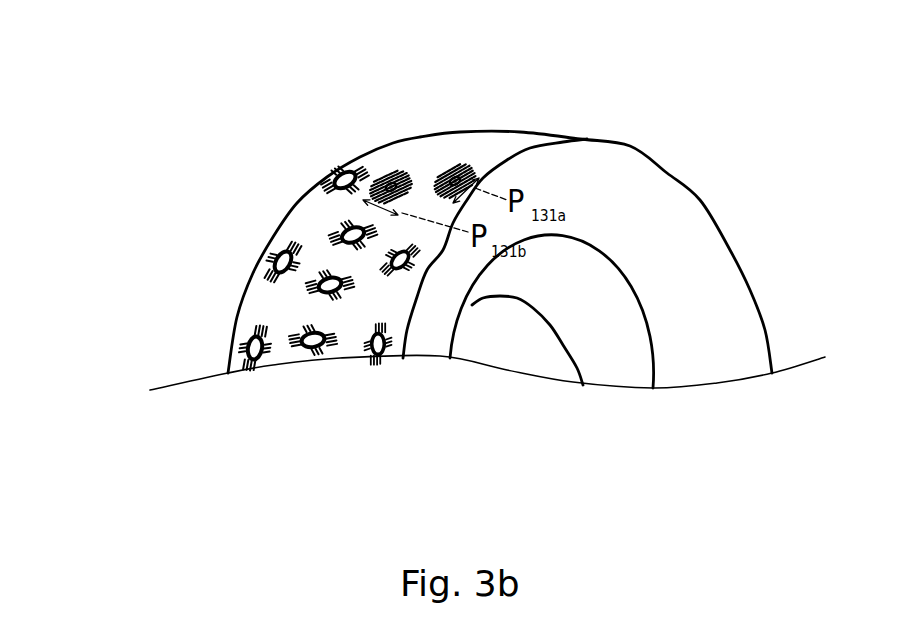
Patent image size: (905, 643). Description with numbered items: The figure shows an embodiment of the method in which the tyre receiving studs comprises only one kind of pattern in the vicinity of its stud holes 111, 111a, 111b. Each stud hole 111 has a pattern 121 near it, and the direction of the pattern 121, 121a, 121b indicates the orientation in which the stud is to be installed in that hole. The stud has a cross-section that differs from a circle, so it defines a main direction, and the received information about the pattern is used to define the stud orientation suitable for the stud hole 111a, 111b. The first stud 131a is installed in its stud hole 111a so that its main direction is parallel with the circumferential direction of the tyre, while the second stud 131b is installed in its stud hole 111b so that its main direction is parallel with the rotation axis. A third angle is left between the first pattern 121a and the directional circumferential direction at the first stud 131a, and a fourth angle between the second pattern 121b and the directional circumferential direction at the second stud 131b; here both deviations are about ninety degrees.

The stud hole 111 is at (347, 177).
The pattern 121 is at (335, 182).
The stud hole 111a is at (285, 259).
The first pattern 121a is at (250, 342).
The stud hole 111b is at (310, 342).
The second pattern 121b is at (322, 344).
The first stud 131a is at (460, 172).
The second stud 131b is at (392, 184).